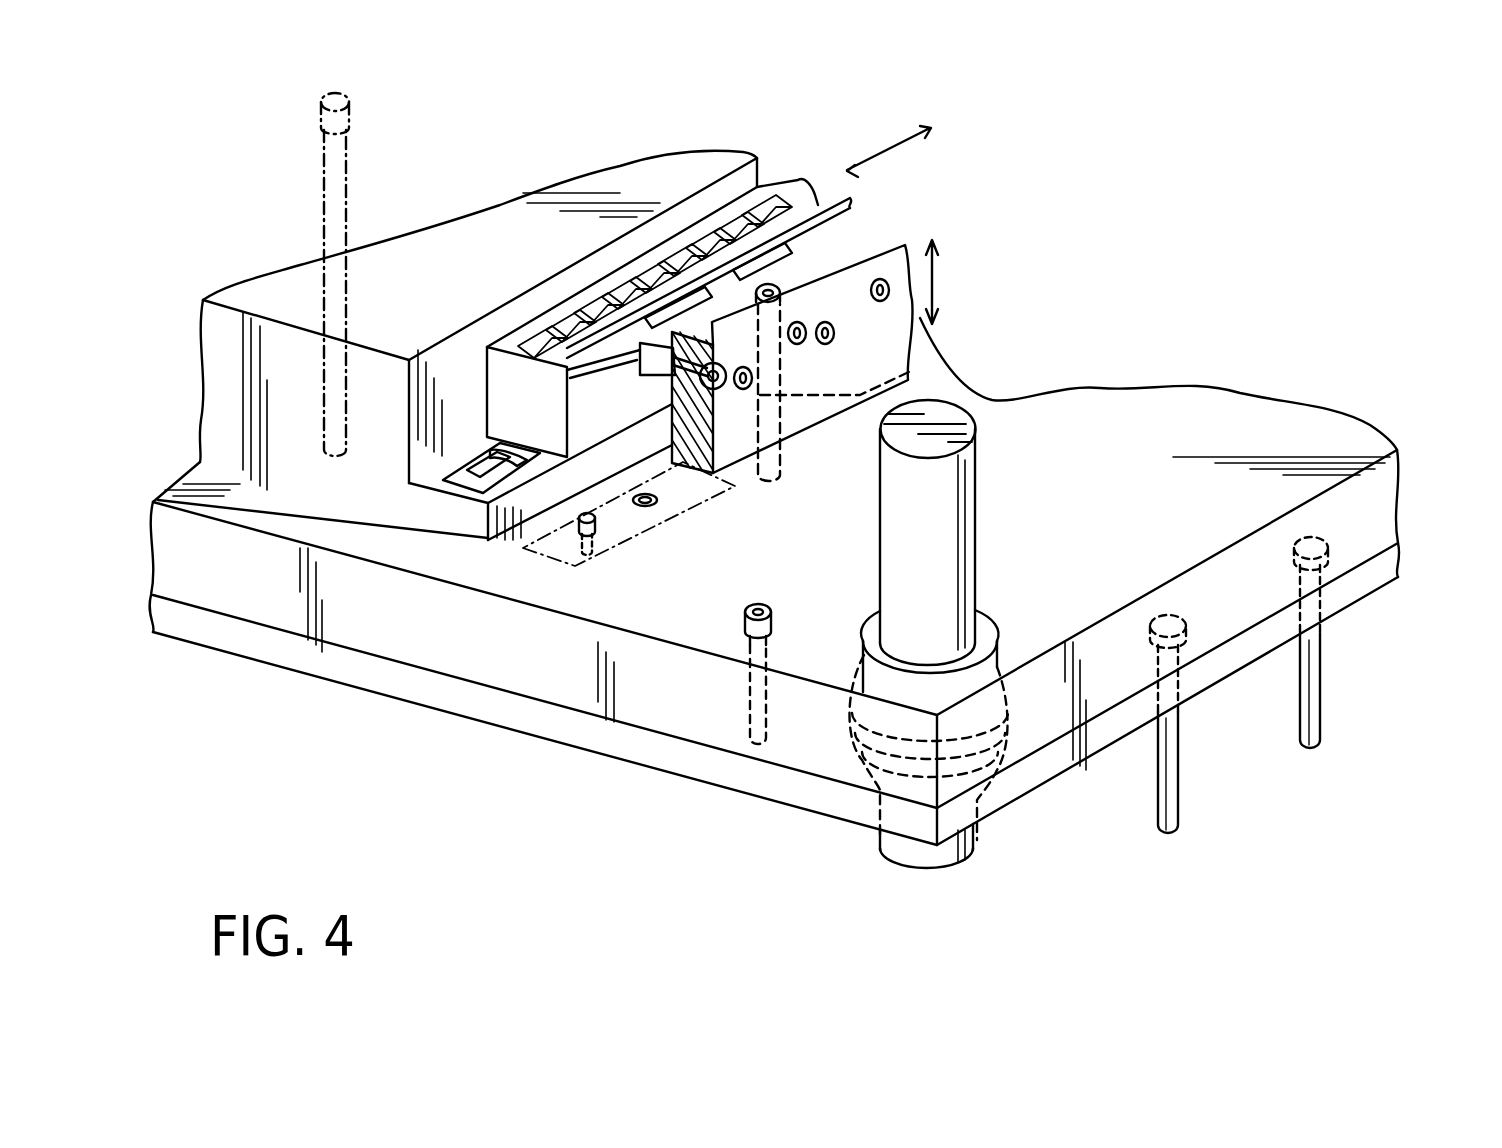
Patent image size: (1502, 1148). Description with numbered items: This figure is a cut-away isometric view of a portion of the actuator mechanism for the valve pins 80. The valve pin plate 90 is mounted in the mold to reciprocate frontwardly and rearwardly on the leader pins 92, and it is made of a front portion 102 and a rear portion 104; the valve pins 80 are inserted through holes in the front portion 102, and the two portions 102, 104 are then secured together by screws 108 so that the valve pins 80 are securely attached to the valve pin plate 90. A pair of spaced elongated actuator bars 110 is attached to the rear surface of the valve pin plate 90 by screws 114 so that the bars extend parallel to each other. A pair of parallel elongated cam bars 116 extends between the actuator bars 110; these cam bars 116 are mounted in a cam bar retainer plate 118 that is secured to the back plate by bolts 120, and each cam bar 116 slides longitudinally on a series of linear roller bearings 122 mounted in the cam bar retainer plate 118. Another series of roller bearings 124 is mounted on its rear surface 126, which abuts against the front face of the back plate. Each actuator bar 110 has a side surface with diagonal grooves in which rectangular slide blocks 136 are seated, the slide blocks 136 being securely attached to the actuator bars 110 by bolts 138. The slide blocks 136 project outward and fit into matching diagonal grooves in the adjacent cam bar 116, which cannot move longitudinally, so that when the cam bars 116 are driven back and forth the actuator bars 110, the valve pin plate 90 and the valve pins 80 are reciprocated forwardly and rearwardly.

The valve pins 80 is at (1322, 704).
The valve pin plate 90 is at (1278, 418).
The leader pins 92 is at (963, 407).
The front portion 102 is at (1387, 568).
The rear portion 104 is at (1380, 505).
The screws 108 is at (758, 746).
The actuator bars 110 is at (888, 232).
The screws 114 is at (913, 378).
The cam bars 116 is at (772, 190).
The cam bar retainer plate 118 is at (726, 160).
The bolts 120 is at (343, 157).
The linear roller bearings 122 is at (470, 483).
The roller bearings 124 is at (697, 248).
The rear surface 126 is at (507, 346).
The slide blocks 136 is at (643, 363).
The bolts 138 is at (698, 250).